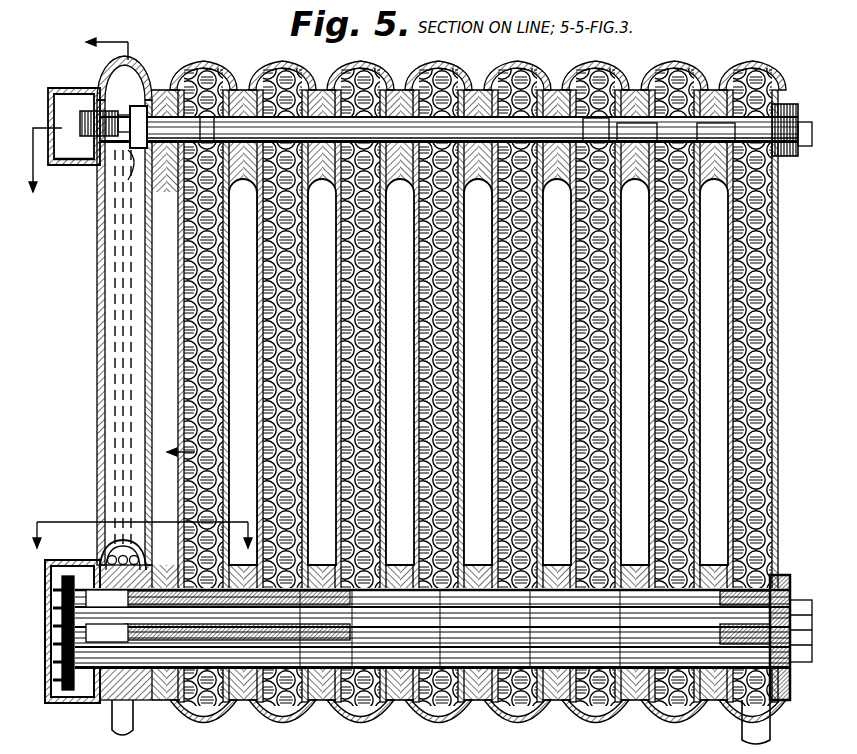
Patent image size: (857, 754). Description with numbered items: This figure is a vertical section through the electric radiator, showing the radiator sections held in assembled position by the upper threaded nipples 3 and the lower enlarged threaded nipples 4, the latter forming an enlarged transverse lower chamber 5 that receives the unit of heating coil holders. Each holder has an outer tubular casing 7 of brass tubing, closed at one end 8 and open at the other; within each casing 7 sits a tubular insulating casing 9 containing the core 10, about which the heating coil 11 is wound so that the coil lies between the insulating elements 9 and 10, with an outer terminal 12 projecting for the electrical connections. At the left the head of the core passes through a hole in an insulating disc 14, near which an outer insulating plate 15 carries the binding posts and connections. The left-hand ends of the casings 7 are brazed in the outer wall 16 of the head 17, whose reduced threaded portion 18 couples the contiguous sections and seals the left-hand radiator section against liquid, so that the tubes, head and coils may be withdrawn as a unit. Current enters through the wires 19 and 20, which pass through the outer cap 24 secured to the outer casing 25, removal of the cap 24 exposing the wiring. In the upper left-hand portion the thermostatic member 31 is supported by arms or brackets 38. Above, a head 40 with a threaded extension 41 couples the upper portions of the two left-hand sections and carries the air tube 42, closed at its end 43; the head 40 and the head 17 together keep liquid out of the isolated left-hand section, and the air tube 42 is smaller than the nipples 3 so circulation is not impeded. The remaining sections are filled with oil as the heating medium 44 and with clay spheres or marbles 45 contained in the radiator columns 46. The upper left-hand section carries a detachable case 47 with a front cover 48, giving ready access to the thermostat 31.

The upper threaded nipple 3 is at (322, 92).
The lower enlarged threaded nipple 4 is at (712, 580).
The enlarged transverse lower chamber 5 is at (632, 580).
The outer tubular casing 7 is at (396, 580).
The closed end of tubing 8 is at (778, 590).
The tubular insulating casing 9 is at (322, 578).
The core 10 is at (246, 214).
The heating coil 11 is at (144, 522).
The outer terminal 12 is at (155, 427).
The insulating disc 14 is at (86, 568).
The outer insulating plate 15 is at (60, 565).
The outer wall of head 16 is at (72, 714).
The head 17 is at (94, 716).
The threaded portion of head 18 is at (134, 706).
The wire 19 is at (62, 590).
The wire 20 is at (62, 660).
The outer cap 24 is at (52, 700).
The outer casing 25 is at (66, 704).
The thermostatic member 31 is at (95, 116).
The arm or bracket 38 is at (140, 108).
The head 40 is at (152, 102).
The threaded extension 41 is at (192, 92).
The air tube 42 is at (246, 92).
The closed end of air tube 43 is at (633, 94).
The heating medium 44 is at (438, 80).
The clay spheres or marbles 45 is at (372, 74).
The radiator column 46 is at (262, 302).
The detachable case 47 is at (98, 166).
The front cover 48 is at (72, 90).